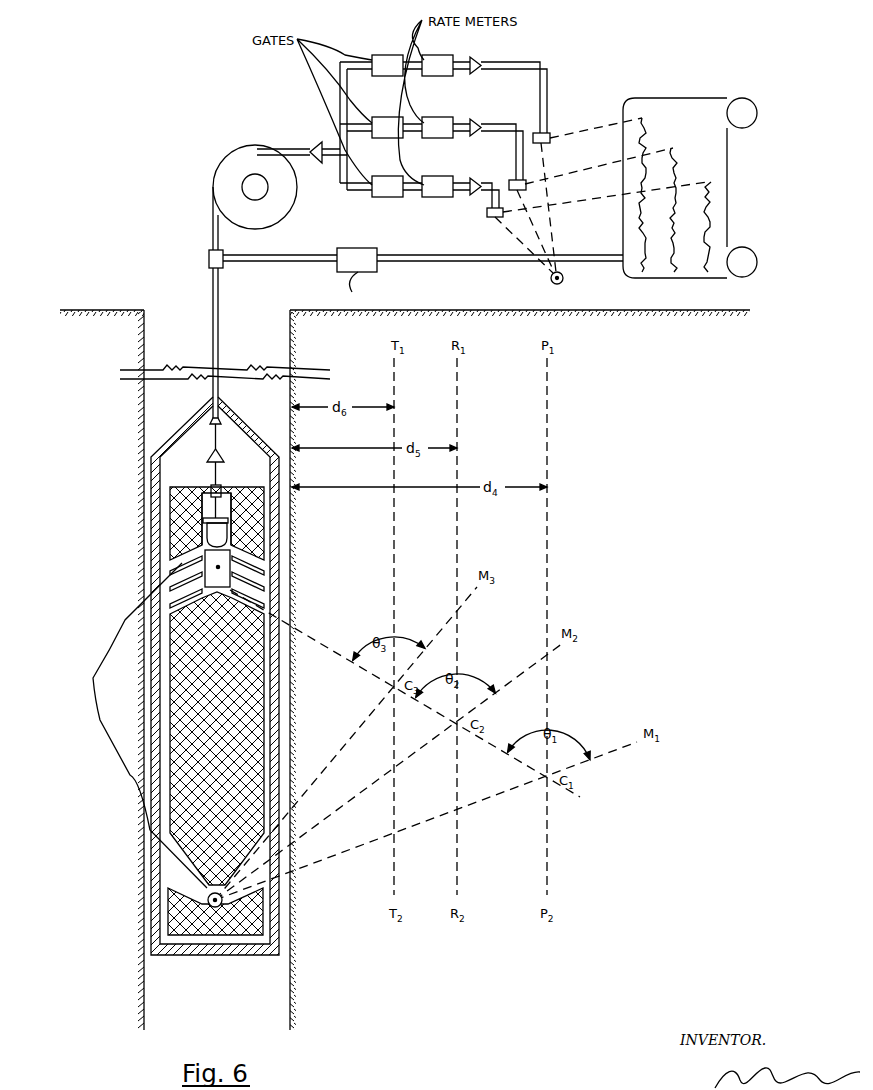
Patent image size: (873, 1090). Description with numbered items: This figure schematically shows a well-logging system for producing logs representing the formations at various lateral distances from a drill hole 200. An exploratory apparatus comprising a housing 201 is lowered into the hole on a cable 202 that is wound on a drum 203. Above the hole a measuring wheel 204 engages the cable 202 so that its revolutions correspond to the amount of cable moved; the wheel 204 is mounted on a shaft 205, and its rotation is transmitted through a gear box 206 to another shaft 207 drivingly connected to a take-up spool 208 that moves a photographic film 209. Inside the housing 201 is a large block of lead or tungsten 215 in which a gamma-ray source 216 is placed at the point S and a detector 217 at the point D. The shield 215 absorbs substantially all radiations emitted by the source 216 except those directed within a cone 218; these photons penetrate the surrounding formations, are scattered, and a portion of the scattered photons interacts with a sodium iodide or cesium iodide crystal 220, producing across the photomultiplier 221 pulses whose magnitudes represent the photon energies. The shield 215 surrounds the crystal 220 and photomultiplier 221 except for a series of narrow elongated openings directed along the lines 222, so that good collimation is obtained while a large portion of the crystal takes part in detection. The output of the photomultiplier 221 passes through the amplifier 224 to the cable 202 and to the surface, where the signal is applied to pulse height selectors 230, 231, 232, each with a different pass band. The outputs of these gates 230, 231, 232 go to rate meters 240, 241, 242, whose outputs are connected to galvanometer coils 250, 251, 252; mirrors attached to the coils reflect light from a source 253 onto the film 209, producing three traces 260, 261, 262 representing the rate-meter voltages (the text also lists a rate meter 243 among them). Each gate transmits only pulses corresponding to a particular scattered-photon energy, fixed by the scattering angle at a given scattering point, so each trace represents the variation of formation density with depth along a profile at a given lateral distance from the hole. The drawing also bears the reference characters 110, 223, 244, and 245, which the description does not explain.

The recorder drive roller 110 is at (753, 104).
The drill hole 200 is at (272, 355).
The housing 201 is at (175, 465).
The cable 202 is at (221, 318).
The drum 203 is at (296, 197).
The measuring wheel 204 is at (208, 262).
The shaft 205 is at (277, 261).
The gear box 206 is at (382, 276).
The shaft 207 is at (455, 264).
The take-up spool 208 is at (753, 272).
The photographic film 209 is at (722, 154).
The block of lead or tungsten 215 is at (197, 686).
The source of gamma rays 216 is at (209, 918).
The detector 217 is at (226, 507).
The cone 218 is at (182, 872).
The crystal 220 is at (223, 573).
The photomultiplier 221 is at (223, 535).
The lines 222 is at (263, 600).
The connector 223 is at (222, 478).
The amplifier 224 is at (222, 452).
The pulse height selector 230 is at (388, 65).
The pulse height selector 231 is at (388, 127).
The pulse height selector 232 is at (388, 186).
The rate meter 240 is at (438, 65).
The rate meter 241 is at (438, 127).
The rate meter 242 is at (438, 186).
The rate meter 243 is at (479, 60).
The amplifier 244 is at (479, 121).
The amplifier 245 is at (479, 180).
The galvanometer coil 250 is at (545, 133).
The galvanometer coil 251 is at (527, 184).
The galvanometer coil 252 is at (487, 215).
The light source 253 is at (562, 284).
The trace 260 is at (645, 121).
The trace 261 is at (676, 151).
The trace 262 is at (710, 204).
The detector point D is at (210, 566).
The source point S is at (209, 903).